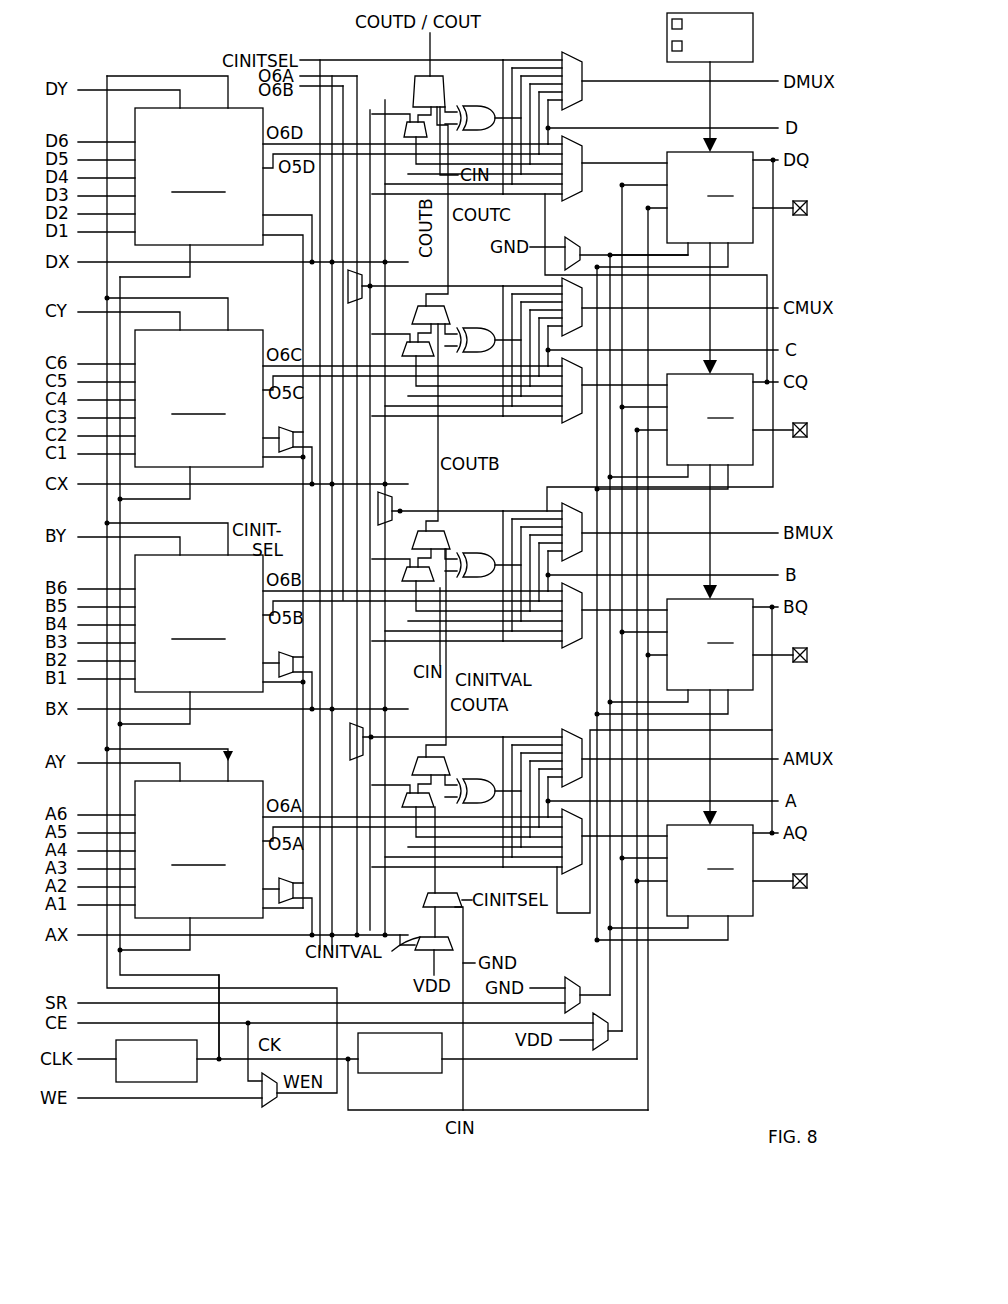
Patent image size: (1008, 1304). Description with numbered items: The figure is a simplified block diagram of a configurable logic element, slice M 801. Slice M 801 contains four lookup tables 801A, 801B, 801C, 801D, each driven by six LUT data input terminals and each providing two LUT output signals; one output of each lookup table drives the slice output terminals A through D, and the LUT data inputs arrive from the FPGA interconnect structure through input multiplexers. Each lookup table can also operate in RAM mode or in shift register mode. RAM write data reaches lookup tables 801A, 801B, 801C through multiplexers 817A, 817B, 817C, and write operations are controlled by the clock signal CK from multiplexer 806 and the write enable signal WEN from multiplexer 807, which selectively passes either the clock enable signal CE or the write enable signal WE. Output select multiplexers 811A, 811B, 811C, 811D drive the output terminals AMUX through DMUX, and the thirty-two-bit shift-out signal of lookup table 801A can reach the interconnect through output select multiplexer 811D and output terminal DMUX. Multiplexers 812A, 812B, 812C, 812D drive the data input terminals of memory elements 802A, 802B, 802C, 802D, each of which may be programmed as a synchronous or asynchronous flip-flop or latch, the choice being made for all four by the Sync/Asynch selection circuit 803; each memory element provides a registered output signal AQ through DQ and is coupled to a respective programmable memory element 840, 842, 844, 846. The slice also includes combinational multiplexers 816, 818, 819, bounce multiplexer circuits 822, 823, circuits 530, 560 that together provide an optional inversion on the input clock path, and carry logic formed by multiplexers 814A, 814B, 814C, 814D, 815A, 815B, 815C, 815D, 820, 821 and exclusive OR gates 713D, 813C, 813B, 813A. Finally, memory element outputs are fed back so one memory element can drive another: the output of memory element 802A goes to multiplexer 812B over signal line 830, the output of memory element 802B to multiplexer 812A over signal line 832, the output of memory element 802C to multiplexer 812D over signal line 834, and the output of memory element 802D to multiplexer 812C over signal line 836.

The slice M 801 is at (168, 53).
The lookup table 801D is at (220, 217).
The lookup table 801C is at (220, 439).
The lookup table 801B is at (220, 664).
The lookup table 801A is at (220, 890).
The memory element 802D is at (750, 219).
The memory element 802C is at (750, 441).
The memory element 802B is at (750, 666).
The memory element 802A is at (750, 892).
The Sync/Asynch selection circuit 803 is at (652, 48).
The multiplexer 806 is at (224, 1033).
The multiplexer 807 is at (268, 1107).
The output select multiplexer 811D is at (584, 88).
The output select multiplexer 811C is at (562, 285).
The output select multiplexer 811B is at (562, 508).
The output select multiplexer 811A is at (562, 735).
The multiplexer 812D is at (584, 165).
The multiplexer 812C is at (566, 420).
The multiplexer 812B is at (580, 650).
The multiplexer 812A is at (565, 866).
The XOR gate D 713D is at (472, 110).
The exclusive OR gate 813C is at (468, 330).
The exclusive OR gate 813B is at (468, 555).
The exclusive OR gate 813A is at (468, 781).
The multiplexer 814D is at (432, 76).
The multiplexer 814C is at (424, 306).
The multiplexer 814B is at (428, 531).
The multiplexer 814A is at (428, 757).
The multiplexer 815D is at (410, 137).
The multiplexer 815C is at (430, 356).
The multiplexer 815B is at (430, 581).
The multiplexer 815A is at (430, 807).
The combinational multiplexer 816 is at (362, 275).
The multiplexer 817C is at (283, 452).
The multiplexer 817B is at (283, 677).
The multiplexer 817A is at (283, 903).
The combinational multiplexer 818 is at (378, 497).
The combinational multiplexer 819 is at (360, 760).
The multiplexer 820 is at (455, 937).
The multiplexer 821 is at (568, 237).
The bounce multiplexer circuit 822 is at (580, 968).
The bounce multiplexer circuit 823 is at (602, 1050).
The clock control circuit 530 is at (370, 1073).
The clock control circuit 560 is at (130, 1082).
The signal line 830 is at (725, 731).
The signal line 832 is at (774, 702).
The signal line 834 is at (725, 276).
The signal line 836 is at (774, 250).
The programmable memory element 840 is at (806, 889).
The programmable memory element 842 is at (806, 663).
The programmable memory element 844 is at (806, 438).
The programmable memory element 846 is at (806, 216).